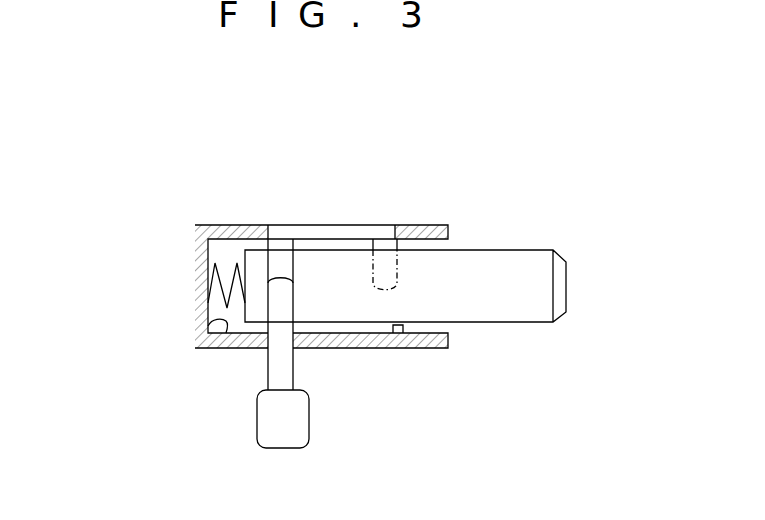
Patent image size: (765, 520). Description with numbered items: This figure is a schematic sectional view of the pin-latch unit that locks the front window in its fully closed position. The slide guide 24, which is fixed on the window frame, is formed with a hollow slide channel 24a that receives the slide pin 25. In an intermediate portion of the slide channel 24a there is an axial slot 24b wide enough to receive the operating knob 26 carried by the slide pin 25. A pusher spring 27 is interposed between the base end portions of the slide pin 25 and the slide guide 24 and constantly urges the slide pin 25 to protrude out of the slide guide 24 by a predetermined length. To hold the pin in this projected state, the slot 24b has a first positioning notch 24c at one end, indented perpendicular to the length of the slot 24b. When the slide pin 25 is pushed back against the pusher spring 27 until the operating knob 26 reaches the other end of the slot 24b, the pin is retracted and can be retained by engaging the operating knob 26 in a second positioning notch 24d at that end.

The slide guide 24 is at (216, 232).
The slide channel 24a is at (213, 323).
The axial slot 24b is at (337, 230).
The first positioning notch 24c is at (391, 290).
The second positioning notch 24d is at (293, 258).
The slide pin 25 is at (525, 265).
The operating knob 26 is at (275, 367).
The pusher spring 27 is at (218, 283).